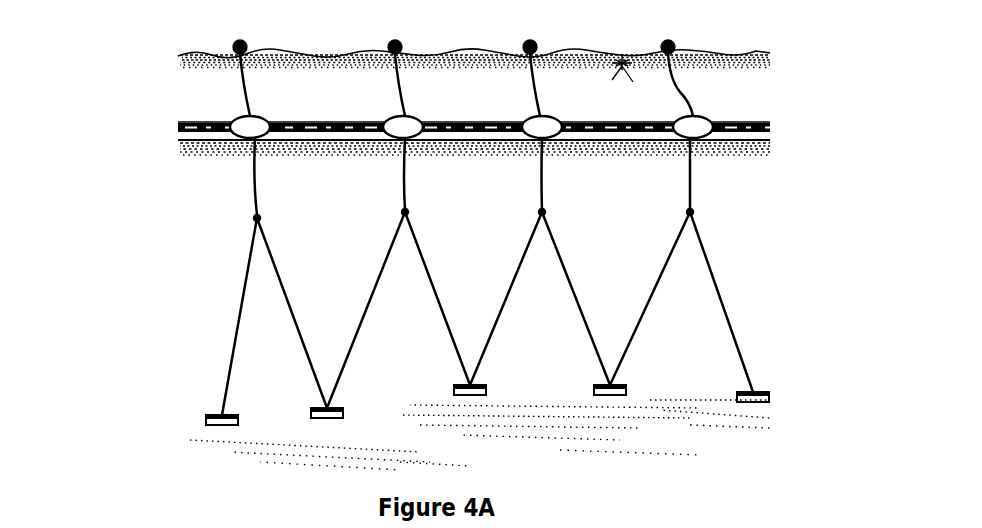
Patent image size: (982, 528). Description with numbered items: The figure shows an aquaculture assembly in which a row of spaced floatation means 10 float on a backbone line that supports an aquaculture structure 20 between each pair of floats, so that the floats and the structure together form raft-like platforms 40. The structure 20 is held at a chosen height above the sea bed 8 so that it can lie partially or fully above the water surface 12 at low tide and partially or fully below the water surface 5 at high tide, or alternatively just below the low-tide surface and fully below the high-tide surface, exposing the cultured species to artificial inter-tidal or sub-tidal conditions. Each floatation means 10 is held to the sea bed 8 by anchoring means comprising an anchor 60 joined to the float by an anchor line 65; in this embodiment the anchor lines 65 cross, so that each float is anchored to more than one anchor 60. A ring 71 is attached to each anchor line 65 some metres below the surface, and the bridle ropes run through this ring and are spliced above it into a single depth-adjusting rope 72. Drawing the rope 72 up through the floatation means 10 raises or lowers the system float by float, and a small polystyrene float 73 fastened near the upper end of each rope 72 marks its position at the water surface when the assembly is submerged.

The water surface 5 is at (767, 67).
The sea bed 8 is at (195, 446).
The floatation means 10 is at (532, 115).
The water surface 12 is at (770, 145).
The aquaculture structure 20 is at (340, 117).
The raft-like platform 40 is at (537, 113).
The anchor 60 is at (620, 383).
The anchor line 65 is at (303, 357).
The ring 71 is at (250, 216).
The depth-adjusting rope 72 is at (245, 96).
The polystyrene float 73 is at (236, 45).